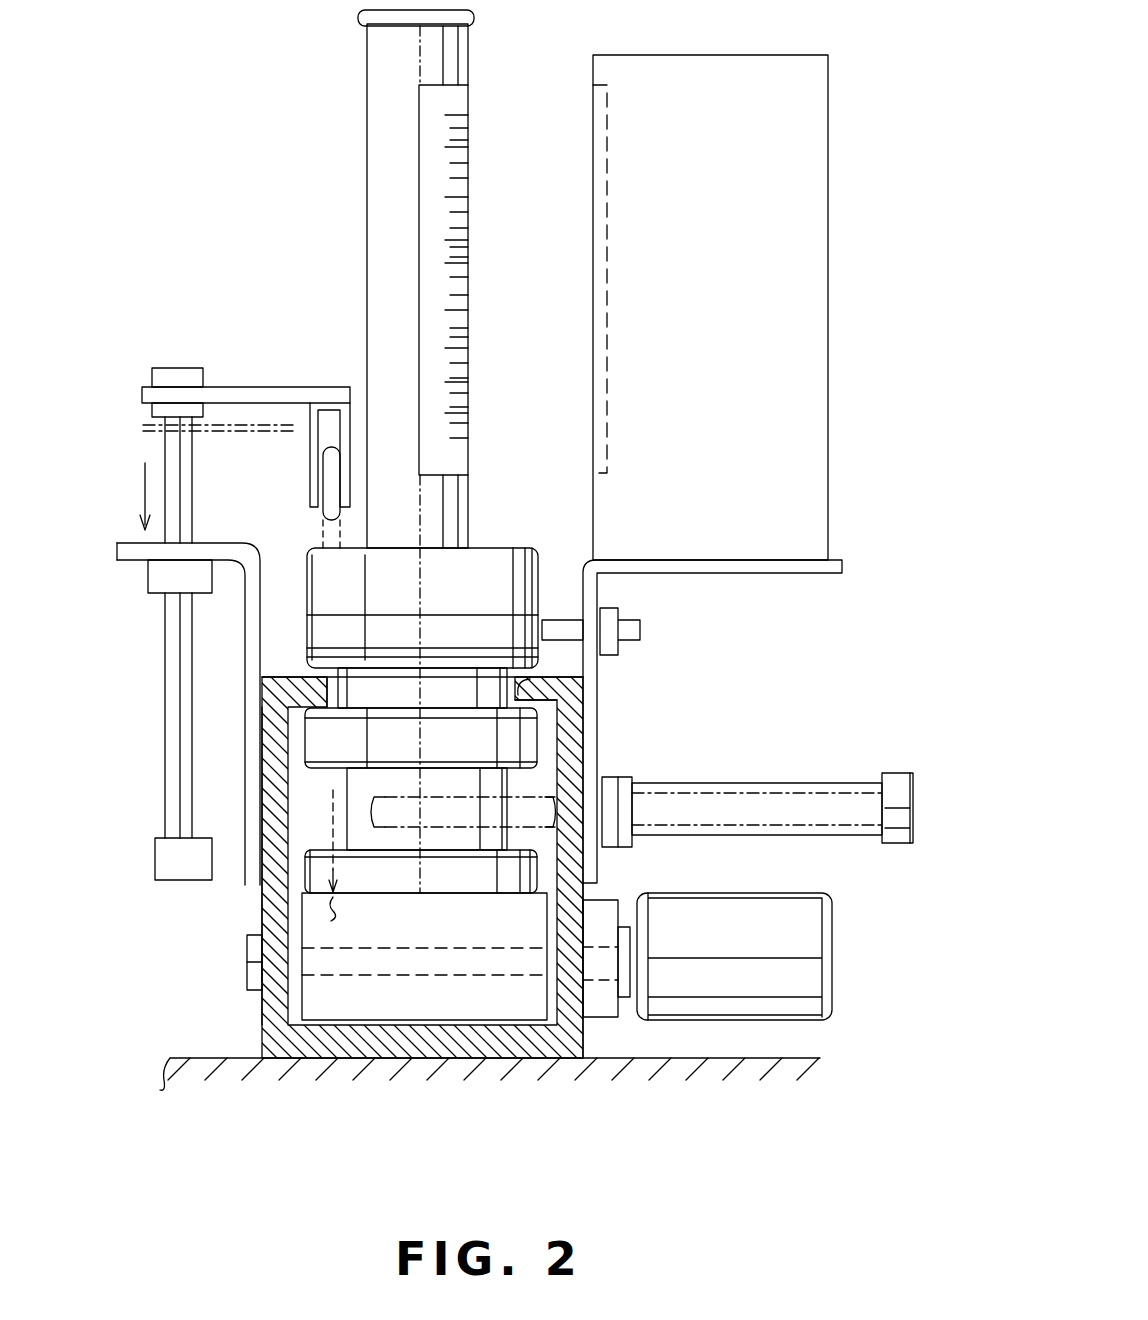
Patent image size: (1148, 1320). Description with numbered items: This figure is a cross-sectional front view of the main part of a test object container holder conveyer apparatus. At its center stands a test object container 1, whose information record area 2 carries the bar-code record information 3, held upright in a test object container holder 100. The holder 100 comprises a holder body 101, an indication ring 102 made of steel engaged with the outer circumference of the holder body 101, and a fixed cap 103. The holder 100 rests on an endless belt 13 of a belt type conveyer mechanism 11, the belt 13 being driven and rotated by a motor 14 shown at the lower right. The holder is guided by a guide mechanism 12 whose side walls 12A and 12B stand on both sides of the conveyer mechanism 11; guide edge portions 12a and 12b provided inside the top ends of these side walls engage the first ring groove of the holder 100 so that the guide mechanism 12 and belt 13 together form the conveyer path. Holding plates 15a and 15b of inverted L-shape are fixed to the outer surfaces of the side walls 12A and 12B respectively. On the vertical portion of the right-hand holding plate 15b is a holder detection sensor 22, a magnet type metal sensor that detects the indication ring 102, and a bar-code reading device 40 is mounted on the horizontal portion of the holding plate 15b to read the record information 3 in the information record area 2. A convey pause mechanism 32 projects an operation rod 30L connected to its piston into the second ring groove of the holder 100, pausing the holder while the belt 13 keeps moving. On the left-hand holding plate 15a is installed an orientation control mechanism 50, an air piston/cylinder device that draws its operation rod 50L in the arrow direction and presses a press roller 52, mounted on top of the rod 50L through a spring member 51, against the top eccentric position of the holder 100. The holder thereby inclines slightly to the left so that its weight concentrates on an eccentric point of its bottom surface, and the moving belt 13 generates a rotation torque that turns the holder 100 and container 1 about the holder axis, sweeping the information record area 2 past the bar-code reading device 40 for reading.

The test object container 1 is at (367, 152).
The information record area 2 is at (457, 80).
The record information 3 is at (470, 277).
The belt type conveyer mechanism 11 is at (567, 1034).
The guide mechanism 12 is at (262, 1032).
The side wall 12A is at (262, 907).
The side wall 12B is at (574, 901).
The guide edge portion 12a is at (302, 691).
The guide edge portion 12b is at (568, 688).
The endless belt 13 is at (528, 1005).
The motor 14 is at (652, 1023).
The holding plate 15a is at (120, 556).
The holding plate 15b is at (785, 565).
The holder detection sensor 22 is at (642, 630).
The operation rod 30L is at (580, 758).
The convey pause mechanism 32 is at (724, 793).
The bar-code reading device 40 is at (698, 55).
The orientation control mechanism 50 is at (230, 354).
The operation rod 50L is at (181, 461).
The spring member 51 is at (288, 385).
The press roller 52 is at (316, 486).
The test object container holder 100 is at (471, 560).
The holder body 101 is at (318, 766).
The indication ring 102 is at (302, 628).
The fixed cap 103 is at (528, 565).